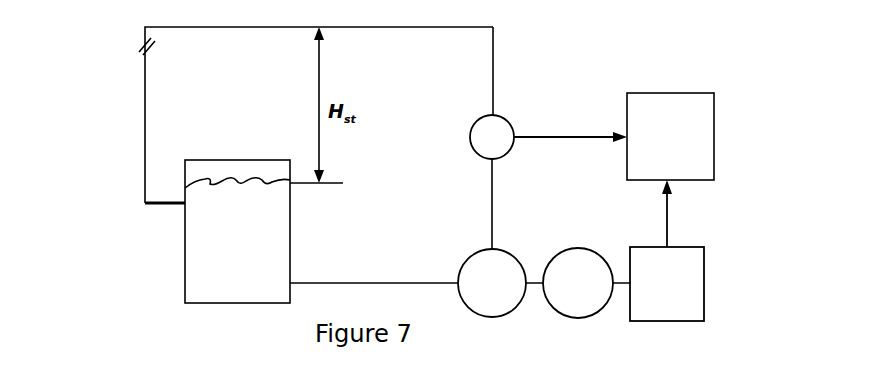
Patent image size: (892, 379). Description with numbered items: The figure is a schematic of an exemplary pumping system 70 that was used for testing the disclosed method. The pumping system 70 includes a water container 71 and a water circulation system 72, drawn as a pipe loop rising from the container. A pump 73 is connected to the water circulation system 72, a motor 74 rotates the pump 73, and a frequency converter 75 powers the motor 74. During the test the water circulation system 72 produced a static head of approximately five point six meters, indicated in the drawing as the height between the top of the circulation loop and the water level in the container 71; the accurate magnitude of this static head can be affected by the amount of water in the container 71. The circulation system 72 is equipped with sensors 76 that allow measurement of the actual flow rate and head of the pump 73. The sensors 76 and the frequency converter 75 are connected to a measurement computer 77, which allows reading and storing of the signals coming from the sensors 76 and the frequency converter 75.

The pumping system 70 is at (84, 83).
The water container 71 is at (237, 231).
The water circulation system 72 is at (493, 80).
The pump 73 is at (492, 283).
The motor 74 is at (578, 283).
The frequency converter 75 is at (667, 284).
The sensors 76 is at (492, 137).
The measurement computer 77 is at (670, 136).